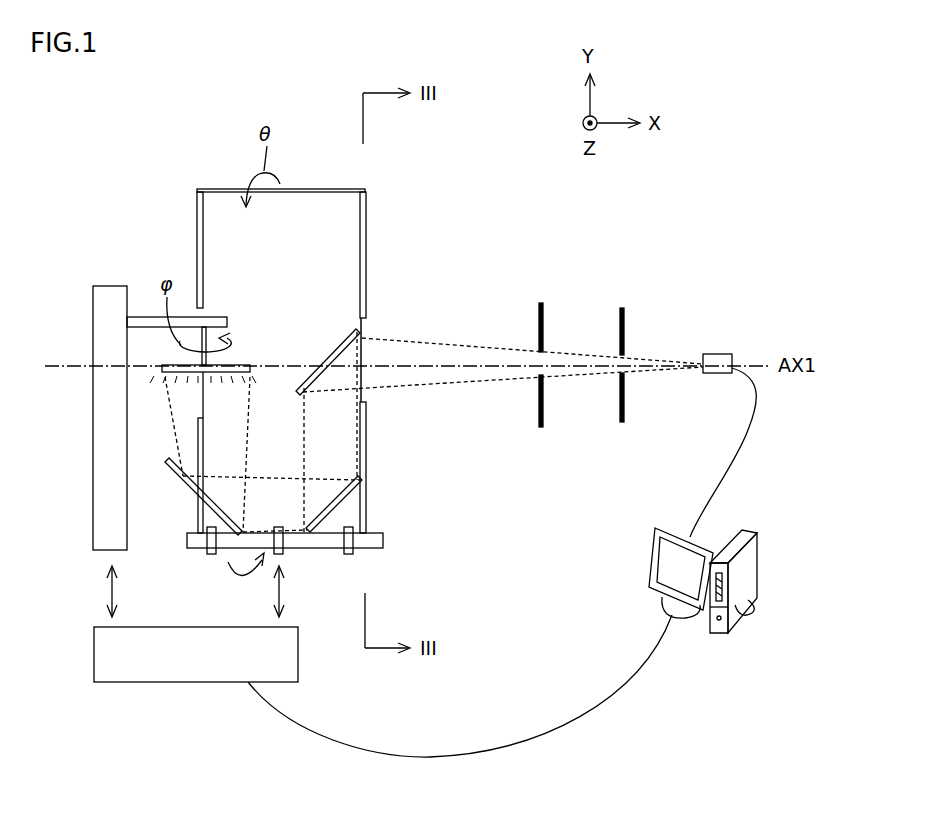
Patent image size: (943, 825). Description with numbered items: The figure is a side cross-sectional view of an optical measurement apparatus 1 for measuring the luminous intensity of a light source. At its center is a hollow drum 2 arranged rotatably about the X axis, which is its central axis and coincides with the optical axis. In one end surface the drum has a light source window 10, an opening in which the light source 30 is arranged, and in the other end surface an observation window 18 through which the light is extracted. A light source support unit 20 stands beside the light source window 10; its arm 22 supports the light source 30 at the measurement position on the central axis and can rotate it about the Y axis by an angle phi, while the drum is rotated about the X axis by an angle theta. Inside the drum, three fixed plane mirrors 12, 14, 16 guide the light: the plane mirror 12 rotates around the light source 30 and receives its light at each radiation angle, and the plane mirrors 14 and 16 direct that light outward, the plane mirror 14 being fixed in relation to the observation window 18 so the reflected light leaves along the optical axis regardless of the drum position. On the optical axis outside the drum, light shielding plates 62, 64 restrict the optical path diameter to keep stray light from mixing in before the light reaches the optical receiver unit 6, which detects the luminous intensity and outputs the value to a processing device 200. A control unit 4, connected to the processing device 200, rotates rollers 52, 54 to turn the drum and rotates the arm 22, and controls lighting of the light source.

The optical measurement apparatus 1 is at (750, 188).
The hollow drum 2 is at (328, 200).
The control unit 4 is at (128, 683).
The optical receiver unit 6 is at (717, 354).
The light source window 10 is at (216, 310).
The plane mirror 12 is at (195, 493).
The plane mirror 14 is at (336, 348).
The plane mirror 16 is at (340, 505).
The observation window 18 is at (378, 325).
The light source support unit 20 is at (109, 293).
The arm 22 is at (208, 337).
The light source 30 is at (180, 362).
The roller 52 is at (365, 546).
The roller 54 is at (331, 553).
The light shielding plate 62 is at (545, 312).
The light shielding plate 64 is at (626, 312).
The processing device 200 is at (757, 588).